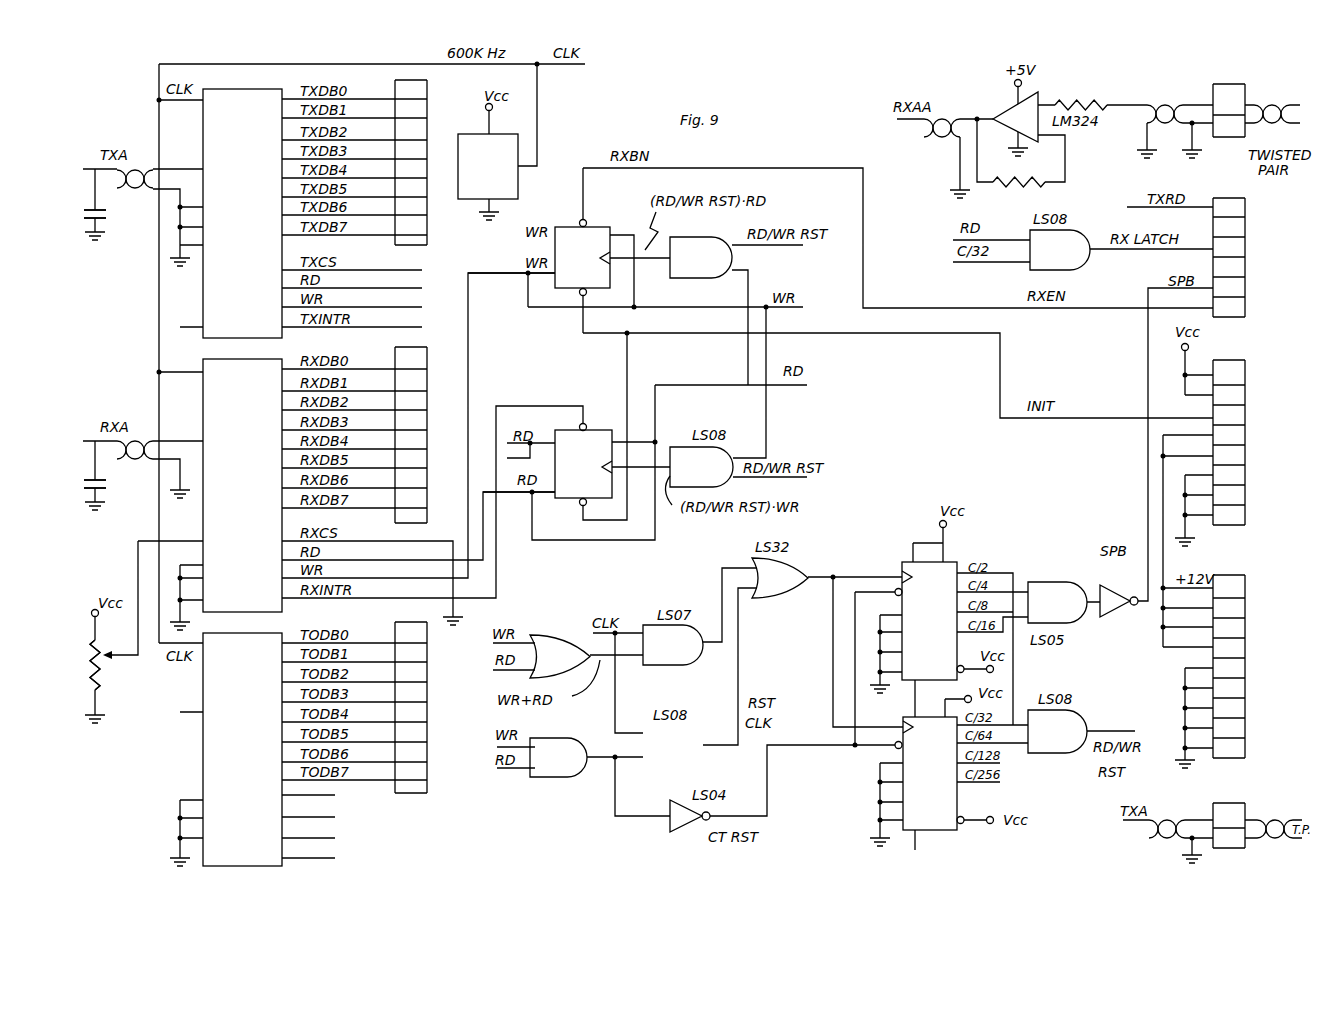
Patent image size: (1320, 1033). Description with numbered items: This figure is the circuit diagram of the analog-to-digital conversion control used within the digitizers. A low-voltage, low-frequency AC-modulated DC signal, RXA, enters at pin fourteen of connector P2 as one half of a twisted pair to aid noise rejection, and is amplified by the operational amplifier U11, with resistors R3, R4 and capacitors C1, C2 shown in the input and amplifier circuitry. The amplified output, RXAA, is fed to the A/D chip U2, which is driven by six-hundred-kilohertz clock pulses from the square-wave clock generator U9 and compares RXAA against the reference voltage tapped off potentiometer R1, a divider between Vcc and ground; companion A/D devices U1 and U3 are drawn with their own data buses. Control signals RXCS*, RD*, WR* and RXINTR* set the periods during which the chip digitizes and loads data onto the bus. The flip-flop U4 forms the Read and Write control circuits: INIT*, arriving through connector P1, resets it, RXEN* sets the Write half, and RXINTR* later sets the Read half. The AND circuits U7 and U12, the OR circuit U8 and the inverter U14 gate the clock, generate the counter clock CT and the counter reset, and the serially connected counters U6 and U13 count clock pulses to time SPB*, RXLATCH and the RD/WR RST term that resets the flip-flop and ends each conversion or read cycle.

The transmit UART 0801 U1 is at (242, 213).
The 801 A/D chip U2 is at (242, 485).
The UART 0801 U3 is at (242, 749).
The LS74 flip-flop U4 is at (583, 363).
The LS163 counter chip U6 is at (929, 621).
The LS08 AND circuit U7 is at (688, 451).
The LS32 OR circuit U8 is at (669, 618).
The 8640A square-wave clock generator U9 is at (488, 166).
The LM 324 operational amplifier U11 is at (1015, 117).
The LS08 AND circuit U12 is at (810, 503).
The LS163 counter chip U13 is at (929, 773).
The LS04 inverter U14 is at (889, 718).
The capacitor .001 C1 is at (116, 228).
The capacitor .001 C2 is at (116, 496).
The potentiometer R1 is at (114, 673).
The resistor 10K R3 is at (1081, 84).
The feedback resistor R4 is at (1019, 193).
The connector P1 is at (820, 438).
The connector P2 is at (1229, 468).